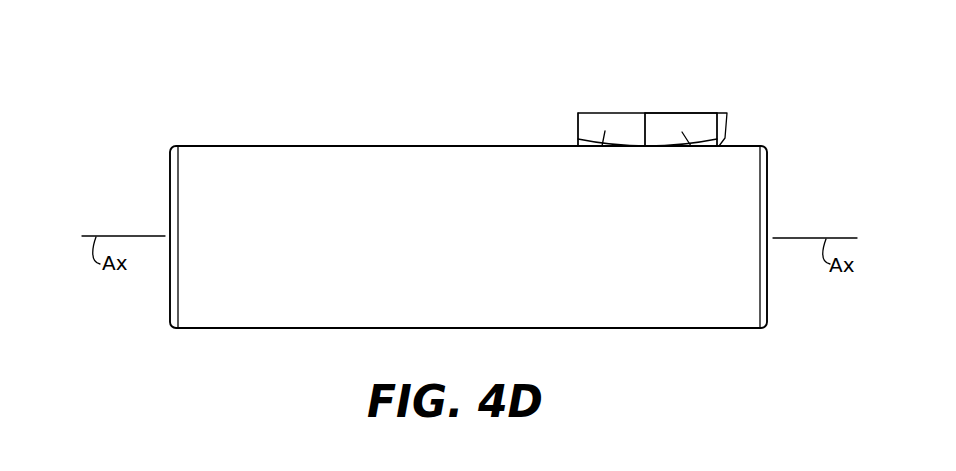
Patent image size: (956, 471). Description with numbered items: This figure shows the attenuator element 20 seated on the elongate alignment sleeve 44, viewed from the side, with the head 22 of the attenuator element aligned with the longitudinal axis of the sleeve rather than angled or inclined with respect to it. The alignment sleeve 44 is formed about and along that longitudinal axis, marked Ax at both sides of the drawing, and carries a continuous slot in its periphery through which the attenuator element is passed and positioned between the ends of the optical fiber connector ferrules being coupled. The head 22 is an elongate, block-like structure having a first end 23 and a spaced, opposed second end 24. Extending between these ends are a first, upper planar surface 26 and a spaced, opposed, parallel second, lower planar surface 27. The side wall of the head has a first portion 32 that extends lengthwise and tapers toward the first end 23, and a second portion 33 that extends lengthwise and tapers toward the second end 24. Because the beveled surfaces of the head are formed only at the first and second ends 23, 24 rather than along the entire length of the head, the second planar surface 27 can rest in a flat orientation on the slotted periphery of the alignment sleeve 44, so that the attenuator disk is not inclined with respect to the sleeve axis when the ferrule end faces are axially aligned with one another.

The attenuator element 20 is at (587, 97).
The head 22 is at (700, 117).
The first end 23 is at (577, 125).
The second end 24 is at (727, 125).
The first planar surface 26 is at (633, 113).
The second planar surface 27 is at (640, 147).
The first portion 32 is at (602, 146).
The second portion 33 is at (691, 146).
The alignment sleeve 44 is at (408, 252).